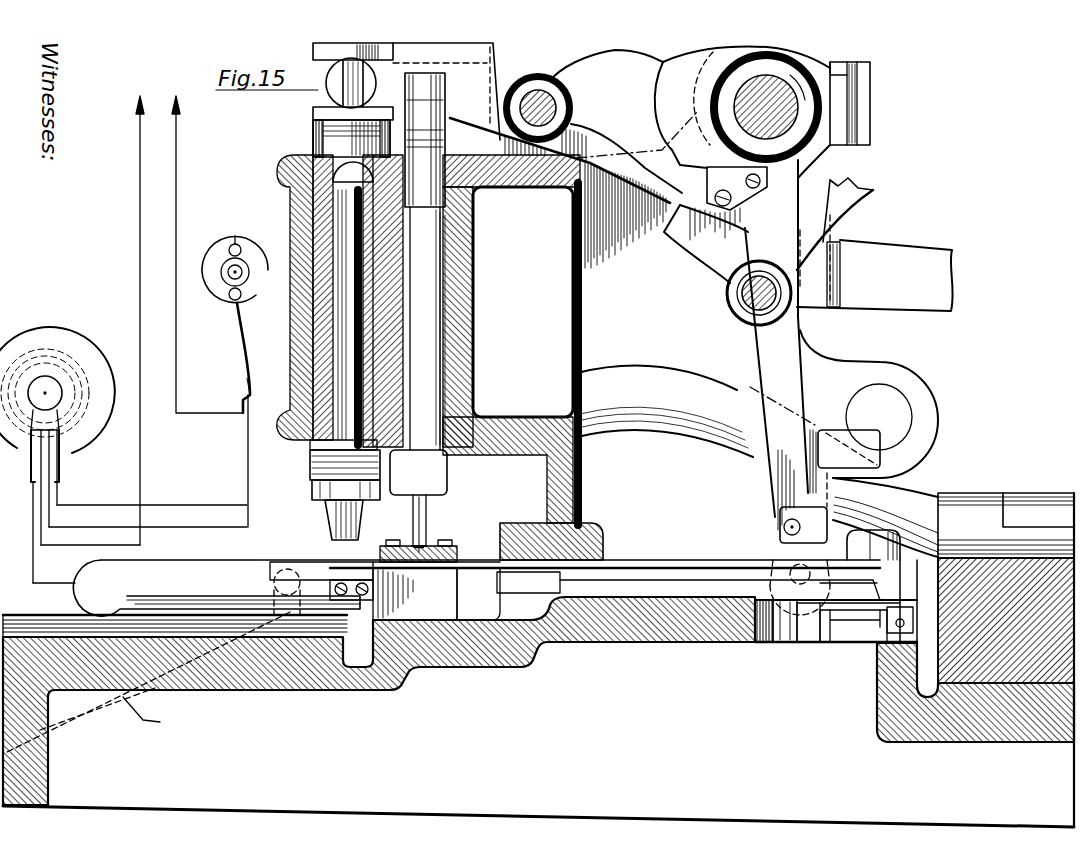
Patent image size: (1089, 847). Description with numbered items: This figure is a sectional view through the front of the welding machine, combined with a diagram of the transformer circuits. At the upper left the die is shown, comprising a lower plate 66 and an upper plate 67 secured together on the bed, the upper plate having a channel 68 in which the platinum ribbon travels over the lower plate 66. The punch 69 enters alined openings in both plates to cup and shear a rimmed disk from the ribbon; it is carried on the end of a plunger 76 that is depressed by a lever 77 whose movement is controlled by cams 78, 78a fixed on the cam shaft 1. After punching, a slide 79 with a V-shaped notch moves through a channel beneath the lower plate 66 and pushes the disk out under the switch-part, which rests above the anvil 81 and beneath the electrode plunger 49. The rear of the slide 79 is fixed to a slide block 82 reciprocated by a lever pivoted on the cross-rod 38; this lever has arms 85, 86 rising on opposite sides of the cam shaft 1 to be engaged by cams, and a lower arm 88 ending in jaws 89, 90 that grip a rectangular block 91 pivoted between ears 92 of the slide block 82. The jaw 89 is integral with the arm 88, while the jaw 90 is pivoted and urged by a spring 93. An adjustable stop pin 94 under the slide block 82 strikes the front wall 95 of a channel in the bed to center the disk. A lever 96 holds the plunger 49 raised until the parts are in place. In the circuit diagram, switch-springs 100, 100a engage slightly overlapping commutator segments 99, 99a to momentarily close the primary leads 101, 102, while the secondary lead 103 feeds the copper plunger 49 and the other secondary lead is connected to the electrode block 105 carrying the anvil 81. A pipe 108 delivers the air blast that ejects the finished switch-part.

The cam shaft 1 is at (822, 148).
The cross-rod 38 is at (725, 296).
The electrode plunger 49 is at (328, 520).
The lower die plate 66 is at (458, 560).
The upper die plate 67 is at (452, 544).
The channel 68 is at (427, 546).
The punch 69 is at (412, 546).
The plunger 76 is at (447, 290).
The lever 77 is at (495, 90).
The cam 78 is at (683, 113).
The cam 78a is at (700, 86).
The slide 79 is at (487, 570).
The anvil 81 is at (335, 568).
The slide block 82 is at (690, 590).
The lever arm 85 is at (875, 244).
The lever arm 86 is at (676, 238).
The arm 88 is at (780, 345).
The jaw 89 is at (778, 546).
The jaw 90 is at (833, 545).
The rectangular block 91 is at (805, 644).
The ears 92 is at (763, 644).
The spring 93 is at (822, 430).
The adjustable stop pin 94 is at (832, 644).
The front wall 95 is at (78, 345).
The lever 96 is at (604, 172).
The commutator segment 99 is at (258, 256).
The commutator segment 99a is at (234, 244).
The switch-spring 100 is at (250, 340).
The switch-spring 100a is at (245, 377).
The primary lead 101 is at (248, 453).
The primary lead 102 is at (140, 459).
The secondary lead 103 is at (685, 420).
The electrode block 105 is at (160, 582).
The air pipe 108 is at (153, 660).